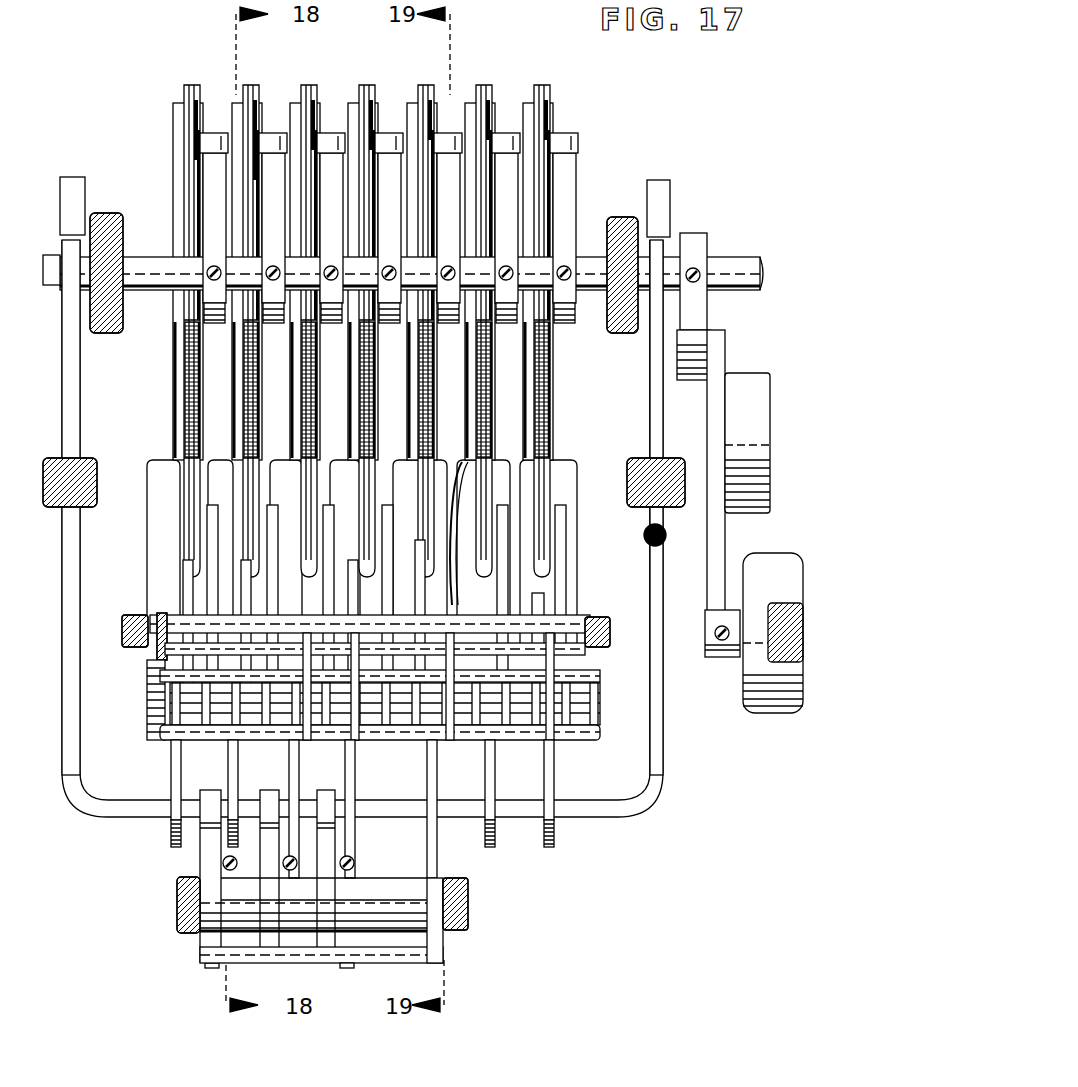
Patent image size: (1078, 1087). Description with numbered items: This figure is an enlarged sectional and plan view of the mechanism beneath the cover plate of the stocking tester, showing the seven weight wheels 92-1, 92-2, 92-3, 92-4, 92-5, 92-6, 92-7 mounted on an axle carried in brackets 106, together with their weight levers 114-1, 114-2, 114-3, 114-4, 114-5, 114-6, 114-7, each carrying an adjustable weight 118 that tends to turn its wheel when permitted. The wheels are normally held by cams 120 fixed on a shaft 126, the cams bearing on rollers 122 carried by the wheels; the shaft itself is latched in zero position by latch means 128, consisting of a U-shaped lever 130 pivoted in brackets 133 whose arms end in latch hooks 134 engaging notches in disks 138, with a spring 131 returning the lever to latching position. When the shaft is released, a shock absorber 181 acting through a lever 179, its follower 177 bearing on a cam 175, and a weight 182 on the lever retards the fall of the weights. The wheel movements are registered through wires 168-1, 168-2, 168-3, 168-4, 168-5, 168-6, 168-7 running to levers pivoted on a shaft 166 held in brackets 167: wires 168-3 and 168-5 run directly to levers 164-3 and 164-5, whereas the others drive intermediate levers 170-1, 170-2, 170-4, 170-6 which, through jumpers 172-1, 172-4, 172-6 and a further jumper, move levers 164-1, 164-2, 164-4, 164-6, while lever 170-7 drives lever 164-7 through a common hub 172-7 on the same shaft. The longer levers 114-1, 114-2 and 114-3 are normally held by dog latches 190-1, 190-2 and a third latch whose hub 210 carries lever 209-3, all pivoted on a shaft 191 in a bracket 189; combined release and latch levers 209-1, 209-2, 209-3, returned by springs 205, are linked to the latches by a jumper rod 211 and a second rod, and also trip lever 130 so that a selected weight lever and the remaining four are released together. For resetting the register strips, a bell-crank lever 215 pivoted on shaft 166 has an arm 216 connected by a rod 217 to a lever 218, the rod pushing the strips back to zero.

The weight wheel 92-1 is at (422, 90).
The weight wheel 92-2 is at (361, 92).
The weight wheel 92-3 is at (303, 90).
The weight wheel 92-4 is at (245, 92).
The weight wheel 92-5 is at (480, 90).
The weight wheel 92-6 is at (185, 90).
The weight wheel 92-7 is at (540, 92).
The bracket 106 is at (108, 333).
The weight lever 114-1 is at (437, 862).
The weight lever 114-2 is at (355, 826).
The weight lever 114-3 is at (300, 776).
The weight lever 114-4 is at (232, 772).
The weight lever 114-5 is at (496, 848).
The weight lever 114-6 is at (170, 835).
The weight lever 114-7 is at (552, 848).
The weight 118 is at (155, 470).
The cam 120 is at (212, 200).
The roller 122 is at (208, 135).
The shaft 126 is at (755, 262).
The latch means 128 is at (665, 795).
The U-shaped lever 130 is at (655, 752).
The spring 131 is at (666, 540).
The bracket 133 is at (90, 458).
The latch hook 134 is at (72, 245).
The disk 138 is at (70, 178).
The lever 164-1 is at (207, 521).
The lever 164-2 is at (268, 510).
The lever 164-3 is at (328, 560).
The lever 164-4 is at (382, 578).
The lever 164-5 is at (458, 520).
The lever 164-6 is at (508, 560).
The lever 164-7 is at (566, 531).
The shaft 166 is at (612, 640).
The bracket 167 is at (122, 635).
The wire 168-1 is at (412, 108).
The wire 168-2 is at (352, 150).
The wire 168-3 is at (297, 150).
The wire 168-4 is at (240, 181).
The wire 168-5 is at (472, 108).
The wire 168-6 is at (182, 166).
The wire 168-7 is at (535, 110).
The lever 170-1 is at (425, 578).
The lever 170-2 is at (348, 600).
The lever 170-4 is at (241, 592).
The lever 170-6 is at (183, 582).
The lever 170-7 is at (544, 600).
The jumper 172-1 is at (309, 660).
The jumper 172-4 is at (357, 655).
The jumper 172-6 is at (452, 660).
The common hub 172-7 is at (555, 642).
The cam 175 is at (700, 240).
The cam follower 177 is at (700, 345).
The lever 179 is at (725, 355).
The shock absorber 181 is at (778, 560).
The weight 182 is at (770, 468).
The bracket 189 is at (177, 930).
The latch 190-1 is at (443, 935).
The latch 190-2 is at (350, 968).
The shaft 191 is at (468, 905).
The spring 205 is at (180, 890).
The release and latch lever 209-1 is at (205, 853).
The release and latch lever 209-2 is at (270, 792).
The release and latch lever 209-3 is at (336, 840).
The hub 210 is at (310, 965).
The jumper rod 211 is at (245, 965).
The bell-crank lever 215 is at (157, 655).
The arm 216 is at (160, 705).
The rod 217 is at (580, 740).
The lever 218 is at (575, 728).